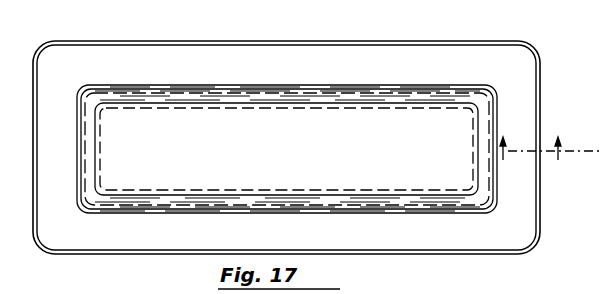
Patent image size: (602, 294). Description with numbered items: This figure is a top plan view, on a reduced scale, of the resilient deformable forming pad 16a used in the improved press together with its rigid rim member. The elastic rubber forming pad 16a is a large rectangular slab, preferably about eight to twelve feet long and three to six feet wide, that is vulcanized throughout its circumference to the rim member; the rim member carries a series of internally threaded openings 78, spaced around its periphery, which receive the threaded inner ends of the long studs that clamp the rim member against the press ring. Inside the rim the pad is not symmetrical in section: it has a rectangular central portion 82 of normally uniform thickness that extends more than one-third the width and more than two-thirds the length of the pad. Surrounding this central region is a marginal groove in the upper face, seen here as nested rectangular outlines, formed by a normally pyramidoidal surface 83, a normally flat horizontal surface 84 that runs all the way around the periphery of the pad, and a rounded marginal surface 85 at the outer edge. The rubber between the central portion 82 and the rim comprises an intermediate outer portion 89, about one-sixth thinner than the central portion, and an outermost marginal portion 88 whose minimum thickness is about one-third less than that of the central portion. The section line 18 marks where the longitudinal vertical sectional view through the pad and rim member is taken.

The elastic rubber forming pad 16a is at (115, 36).
The internally threaded openings 78 is at (160, 44).
The rectangular central portion 82 is at (286, 163).
The pyramidoidal surface 83 is at (138, 95).
The flat horizontal surface 84 is at (58, 113).
The rounded marginal surface 85 is at (522, 60).
The marginal portion 88 is at (513, 244).
The outer portion 89 is at (477, 232).
The section line 18- 18 is at (548, 164).